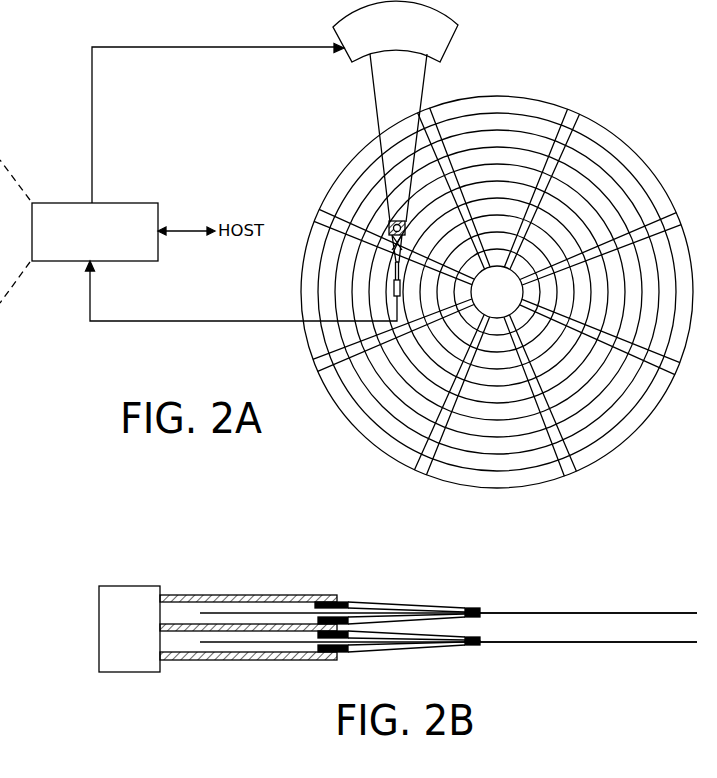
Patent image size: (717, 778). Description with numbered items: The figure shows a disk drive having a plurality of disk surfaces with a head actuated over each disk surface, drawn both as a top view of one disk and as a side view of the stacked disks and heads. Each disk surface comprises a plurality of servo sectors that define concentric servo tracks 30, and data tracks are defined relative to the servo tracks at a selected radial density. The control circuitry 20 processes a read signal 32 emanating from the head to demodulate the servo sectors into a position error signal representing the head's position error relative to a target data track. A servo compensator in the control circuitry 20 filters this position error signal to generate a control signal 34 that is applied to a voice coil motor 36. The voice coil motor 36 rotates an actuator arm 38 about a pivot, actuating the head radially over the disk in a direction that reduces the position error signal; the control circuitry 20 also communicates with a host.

In FIG. 2A, the control circuitry 20 is at (128, 203).
In FIG. 2A, the control signal 34 is at (92, 112).
In FIG. 2A, the read signal 32 is at (203, 323).
In FIG. 2A, the voice coil motor 36 is at (349, 58).
In FIG. 2B, the voice coil motor 36 is at (128, 586).
In FIG. 2A, the actuator arm 38 is at (378, 124).
In FIG. 2A, the servo tracks 30 is at (497, 120).